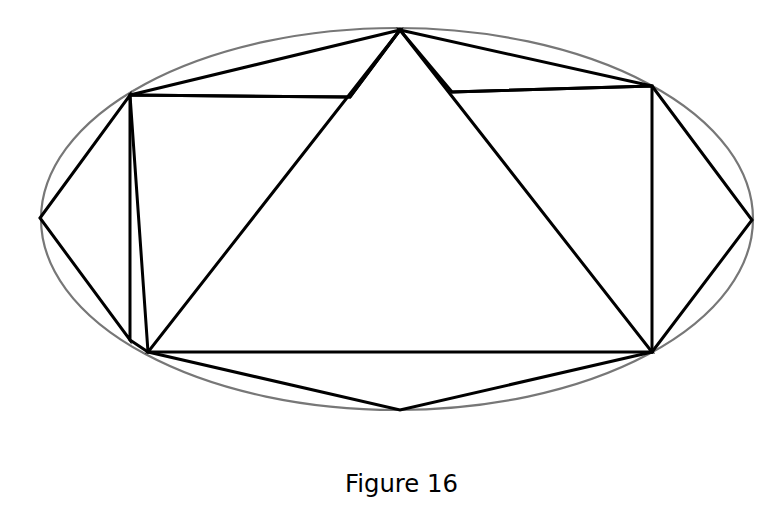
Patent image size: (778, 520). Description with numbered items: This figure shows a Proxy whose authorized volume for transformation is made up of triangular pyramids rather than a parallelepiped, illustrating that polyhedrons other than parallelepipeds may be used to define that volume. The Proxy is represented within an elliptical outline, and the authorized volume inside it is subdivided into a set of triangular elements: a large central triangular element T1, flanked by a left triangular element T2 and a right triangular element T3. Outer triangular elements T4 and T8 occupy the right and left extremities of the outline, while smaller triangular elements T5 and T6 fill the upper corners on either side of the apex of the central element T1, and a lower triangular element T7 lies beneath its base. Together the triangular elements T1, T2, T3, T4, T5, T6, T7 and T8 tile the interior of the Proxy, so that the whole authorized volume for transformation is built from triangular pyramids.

The triangle T1 is at (400, 191).
The triangle T2 is at (265, 191).
The triangle T3 is at (552, 219).
The triangle T4 is at (702, 219).
The triangle T5 is at (265, 65).
The triangle T6 is at (526, 65).
The triangle T7 is at (400, 381).
The triangle T8 is at (94, 223).